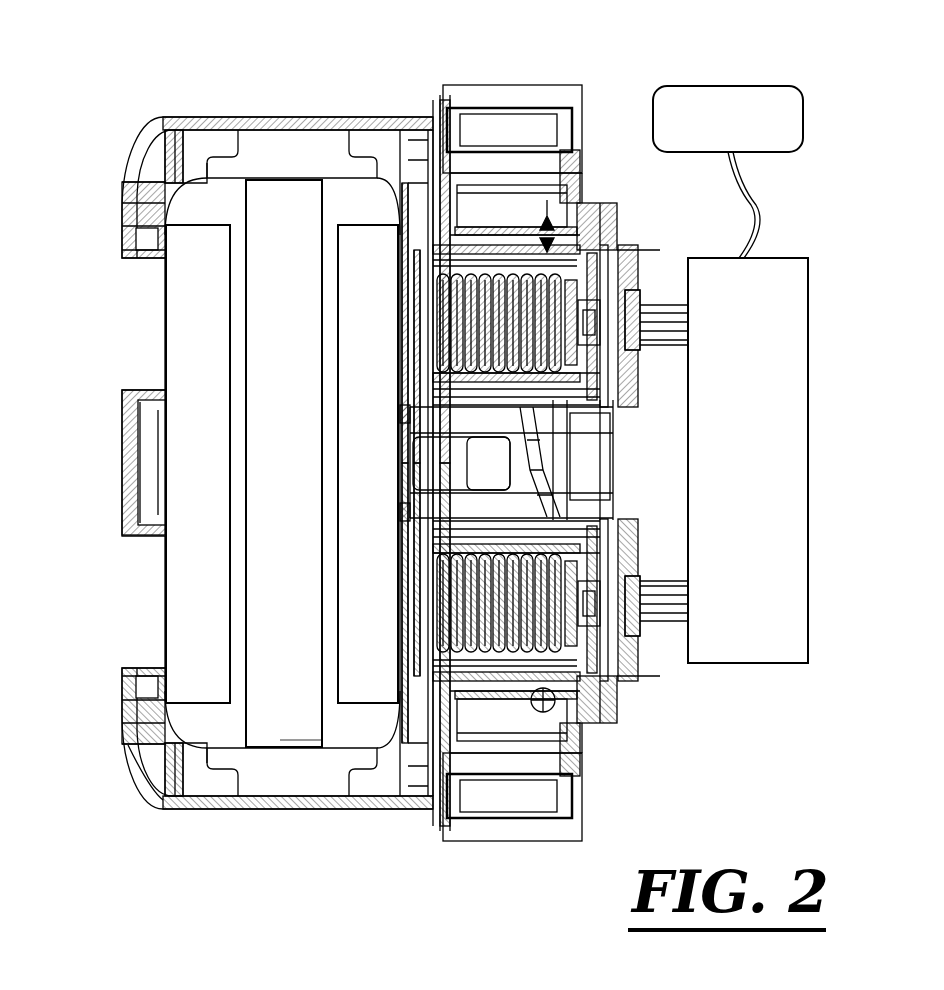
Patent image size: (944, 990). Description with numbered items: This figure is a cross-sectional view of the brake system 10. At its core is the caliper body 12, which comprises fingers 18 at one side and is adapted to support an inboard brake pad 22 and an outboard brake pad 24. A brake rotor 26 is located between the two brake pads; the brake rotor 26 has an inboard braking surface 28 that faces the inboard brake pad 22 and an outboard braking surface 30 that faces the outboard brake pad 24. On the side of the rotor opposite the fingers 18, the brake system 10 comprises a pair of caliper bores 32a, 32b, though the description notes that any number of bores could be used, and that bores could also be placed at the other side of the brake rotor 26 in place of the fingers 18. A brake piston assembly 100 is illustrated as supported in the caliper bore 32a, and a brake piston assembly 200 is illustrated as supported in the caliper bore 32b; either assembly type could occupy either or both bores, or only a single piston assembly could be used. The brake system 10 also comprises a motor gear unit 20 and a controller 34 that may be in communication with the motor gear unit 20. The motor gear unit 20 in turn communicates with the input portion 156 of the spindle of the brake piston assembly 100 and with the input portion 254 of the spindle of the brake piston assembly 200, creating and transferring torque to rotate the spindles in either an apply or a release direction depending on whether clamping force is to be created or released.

The brake system 10 is at (177, 66).
The caliper body 12 is at (360, 143).
The fingers 18 is at (130, 236).
The motor gear unit (MGU) 20 is at (759, 453).
The inboard brake pad 22 is at (384, 338).
The outboard brake pad 24 is at (210, 338).
The brake rotor 26 is at (298, 502).
The inboard braking surface 28 is at (318, 718).
The outboard braking surface 30 is at (243, 602).
The caliper bore 32a is at (490, 232).
The caliper bore 32b is at (507, 677).
The controller 34 is at (744, 131).
The brake piston assembly 100 is at (567, 252).
The input portion 156 is at (668, 313).
The brake piston assembly 200 is at (598, 676).
The input portion 254 is at (662, 615).